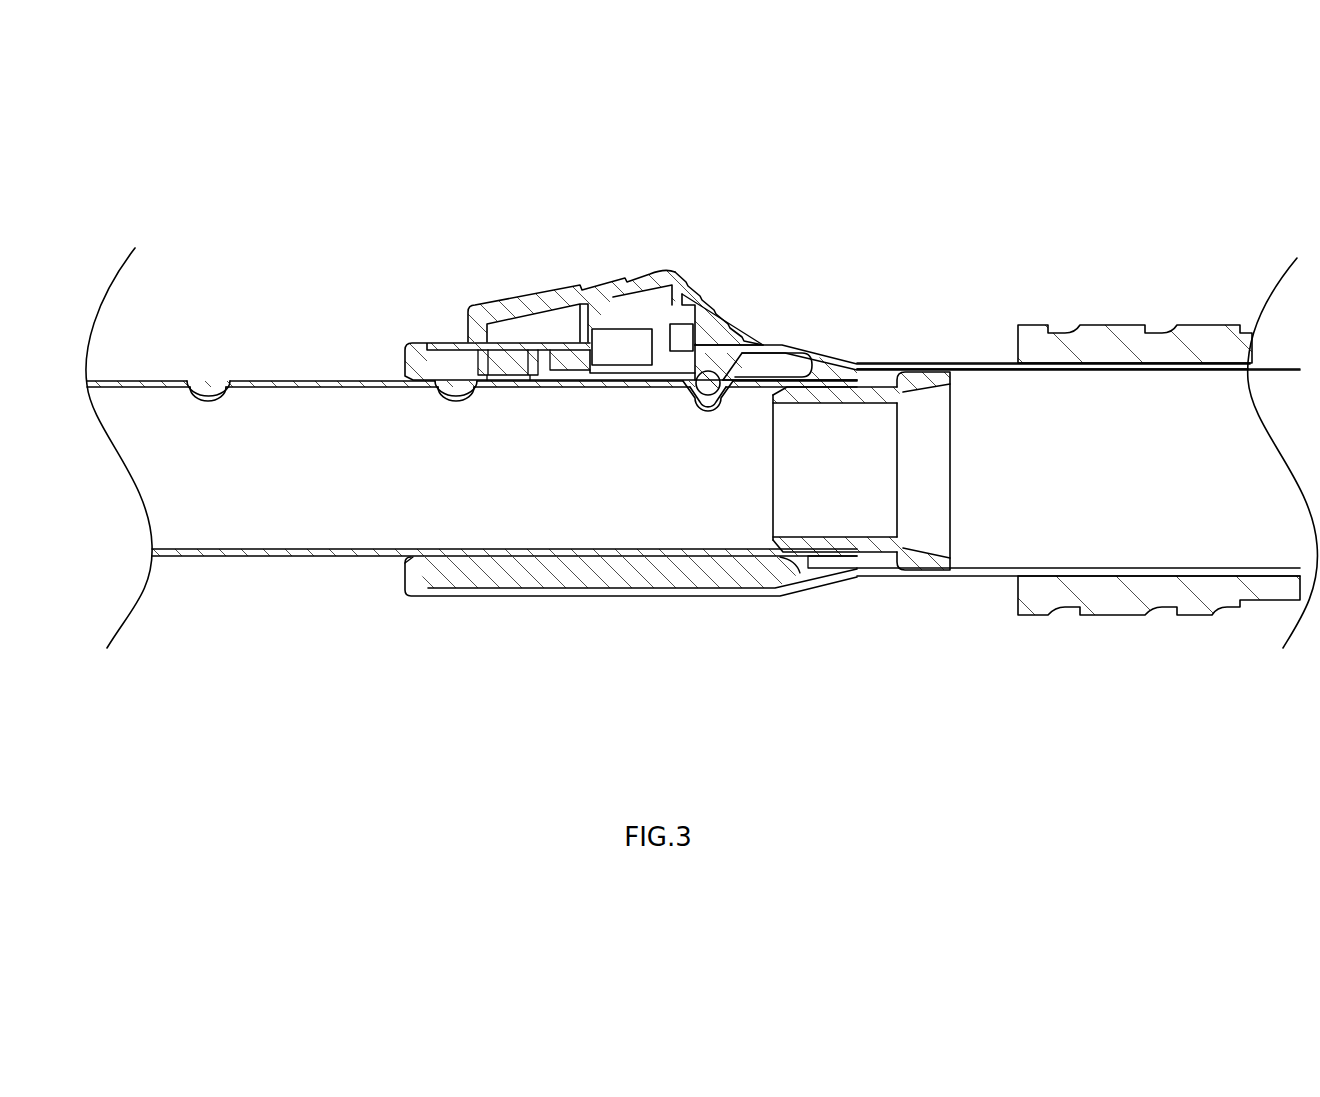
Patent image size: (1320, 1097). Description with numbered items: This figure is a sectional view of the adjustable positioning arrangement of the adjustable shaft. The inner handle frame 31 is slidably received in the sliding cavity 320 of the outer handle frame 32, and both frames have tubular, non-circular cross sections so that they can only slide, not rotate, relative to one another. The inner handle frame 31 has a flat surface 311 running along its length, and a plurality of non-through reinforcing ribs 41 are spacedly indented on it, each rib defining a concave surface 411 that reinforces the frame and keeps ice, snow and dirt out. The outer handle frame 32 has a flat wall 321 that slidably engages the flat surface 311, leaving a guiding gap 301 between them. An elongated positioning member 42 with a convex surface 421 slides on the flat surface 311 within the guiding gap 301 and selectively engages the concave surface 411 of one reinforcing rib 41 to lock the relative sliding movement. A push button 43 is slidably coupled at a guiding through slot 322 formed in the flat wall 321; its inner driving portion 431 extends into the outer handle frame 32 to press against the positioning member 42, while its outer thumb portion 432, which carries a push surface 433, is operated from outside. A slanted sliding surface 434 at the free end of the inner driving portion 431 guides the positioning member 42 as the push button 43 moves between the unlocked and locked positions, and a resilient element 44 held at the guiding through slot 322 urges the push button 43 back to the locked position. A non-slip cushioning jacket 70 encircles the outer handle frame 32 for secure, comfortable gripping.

The inner handle frame 31 is at (471, 471).
The flat surface 311 is at (308, 380).
The reinforcing rib 41 is at (450, 368).
The concave surface 411 is at (208, 418).
The guiding gap 301 is at (419, 359).
The flat wall 321 is at (597, 318).
The guiding through slot 322 is at (581, 368).
The sliding cavity 320 is at (626, 527).
The outer handle frame 32 is at (861, 559).
The positioning member 42 is at (778, 388).
The convex surface 421 is at (729, 414).
The push button 43 is at (884, 214).
The inner driving portion 431 is at (690, 335).
The outer thumb portion 432 is at (622, 292).
The push surface 433 is at (697, 262).
The slanted sliding surface 434 is at (762, 362).
The resilient element 44 is at (612, 345).
The non-slip cushioning jacket 70 is at (1125, 336).